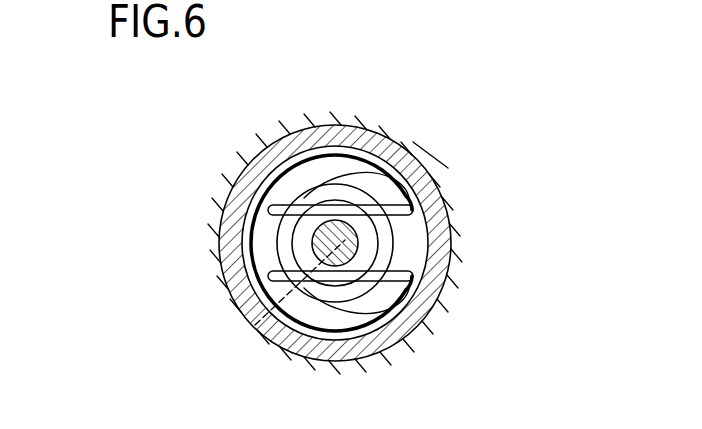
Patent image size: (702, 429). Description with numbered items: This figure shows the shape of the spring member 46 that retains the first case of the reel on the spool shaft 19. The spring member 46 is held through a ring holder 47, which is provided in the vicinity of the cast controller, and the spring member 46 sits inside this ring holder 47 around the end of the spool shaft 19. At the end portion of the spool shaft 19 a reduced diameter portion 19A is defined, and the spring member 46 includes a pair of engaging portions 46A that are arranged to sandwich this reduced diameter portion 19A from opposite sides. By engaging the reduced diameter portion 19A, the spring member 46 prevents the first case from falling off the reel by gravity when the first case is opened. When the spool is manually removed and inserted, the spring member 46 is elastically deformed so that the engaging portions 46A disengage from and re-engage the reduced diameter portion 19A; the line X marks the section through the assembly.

The spool shaft 19 is at (313, 200).
The reduced diameter portion 19A is at (325, 247).
The spring member 46 is at (425, 165).
The engaging portions 46A is at (400, 262).
The ring holder 47 is at (437, 300).
The axis line X is at (252, 328).